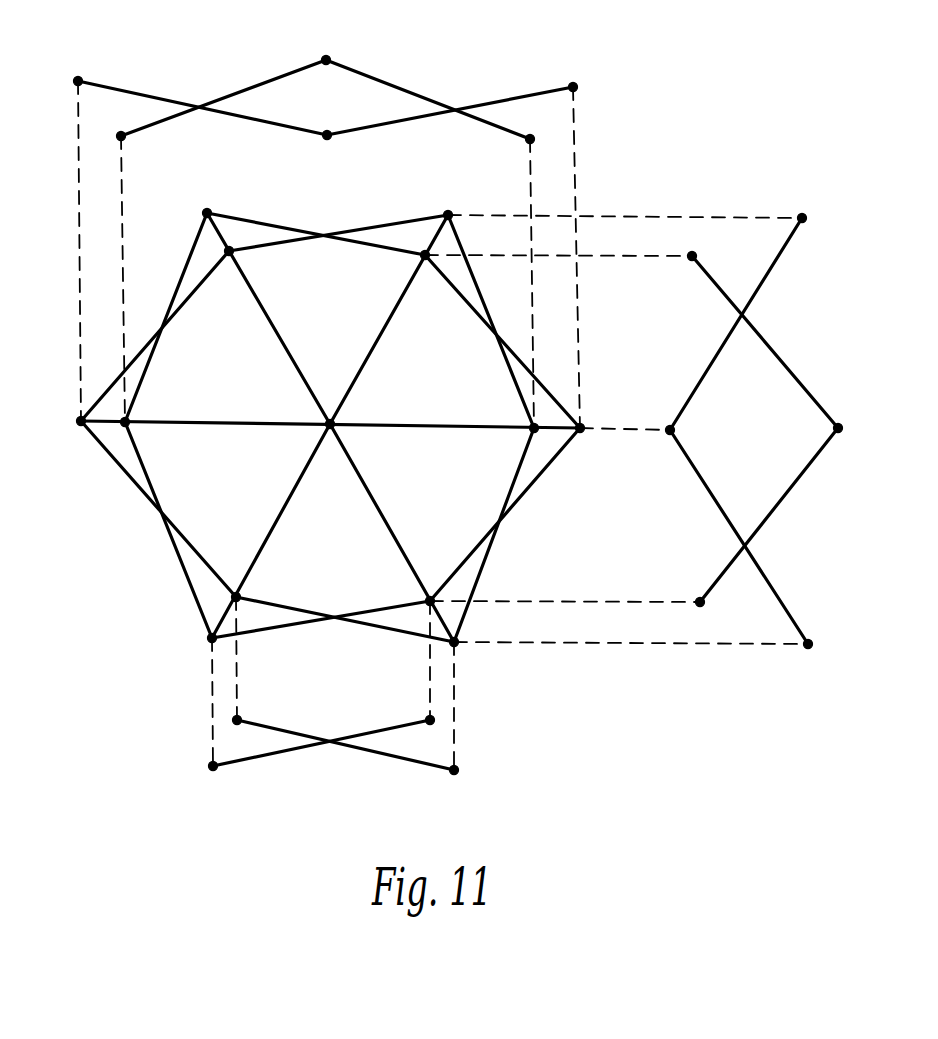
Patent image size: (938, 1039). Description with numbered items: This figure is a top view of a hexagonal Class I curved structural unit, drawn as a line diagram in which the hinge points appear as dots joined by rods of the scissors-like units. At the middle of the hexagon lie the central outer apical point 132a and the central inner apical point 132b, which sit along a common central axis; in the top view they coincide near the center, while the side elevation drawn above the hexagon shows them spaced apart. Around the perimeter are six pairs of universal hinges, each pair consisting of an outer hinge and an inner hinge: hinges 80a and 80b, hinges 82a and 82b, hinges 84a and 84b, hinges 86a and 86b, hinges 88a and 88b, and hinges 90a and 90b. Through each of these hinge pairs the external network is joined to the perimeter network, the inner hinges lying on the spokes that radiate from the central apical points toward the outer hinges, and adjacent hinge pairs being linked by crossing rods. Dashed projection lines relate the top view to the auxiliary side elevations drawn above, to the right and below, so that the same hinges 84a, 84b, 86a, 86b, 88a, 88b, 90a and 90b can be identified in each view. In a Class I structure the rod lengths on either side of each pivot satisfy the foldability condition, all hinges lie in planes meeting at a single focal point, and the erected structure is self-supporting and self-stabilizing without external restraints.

The universal hinge 90a is at (81, 421).
The universal hinge 90b is at (125, 422).
The central outer apical point 132a is at (330, 424).
The central inner apical point 132b is at (327, 135).
The universal hinge 80a is at (207, 213).
The universal hinge 80b is at (229, 251).
The universal hinge 82b is at (425, 255).
The universal hinge 82a is at (448, 215).
The universal hinge 84b is at (534, 428).
The universal hinge 84a is at (580, 428).
The universal hinge 88b is at (236, 597).
The universal hinge 86b is at (430, 601).
The universal hinge 88a is at (212, 638).
The universal hinge 86a is at (454, 642).